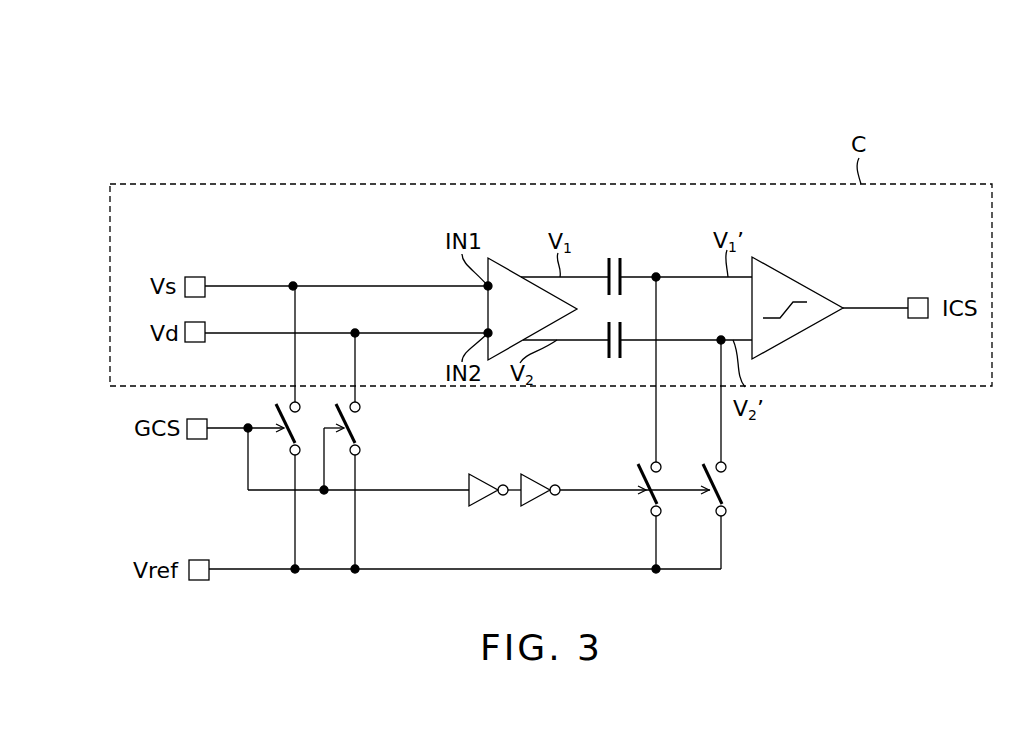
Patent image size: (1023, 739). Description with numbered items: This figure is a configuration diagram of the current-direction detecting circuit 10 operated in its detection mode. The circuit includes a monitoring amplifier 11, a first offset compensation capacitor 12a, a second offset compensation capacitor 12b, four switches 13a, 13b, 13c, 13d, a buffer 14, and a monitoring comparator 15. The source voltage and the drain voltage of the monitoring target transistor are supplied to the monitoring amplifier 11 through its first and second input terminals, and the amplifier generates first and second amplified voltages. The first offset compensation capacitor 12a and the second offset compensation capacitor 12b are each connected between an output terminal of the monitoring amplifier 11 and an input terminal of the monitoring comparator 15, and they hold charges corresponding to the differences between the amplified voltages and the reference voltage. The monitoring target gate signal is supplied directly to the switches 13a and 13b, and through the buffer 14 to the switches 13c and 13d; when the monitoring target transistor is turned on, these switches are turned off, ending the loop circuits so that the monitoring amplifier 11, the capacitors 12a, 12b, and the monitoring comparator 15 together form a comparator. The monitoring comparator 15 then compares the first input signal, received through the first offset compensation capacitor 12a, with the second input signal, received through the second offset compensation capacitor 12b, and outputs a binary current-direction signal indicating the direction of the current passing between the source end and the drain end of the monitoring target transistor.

The current-direction detecting circuit 10 is at (126, 160).
The monitoring amplifier 11 is at (513, 265).
The first offset compensation capacitor 12a is at (622, 270).
The second offset compensation capacitor 12b is at (605, 353).
The switch 13a is at (283, 413).
The switch 13b is at (343, 413).
The switch 13c is at (640, 470).
The switch 13d is at (705, 470).
The buffer 14 is at (488, 472).
The monitoring comparator 15 is at (800, 277).